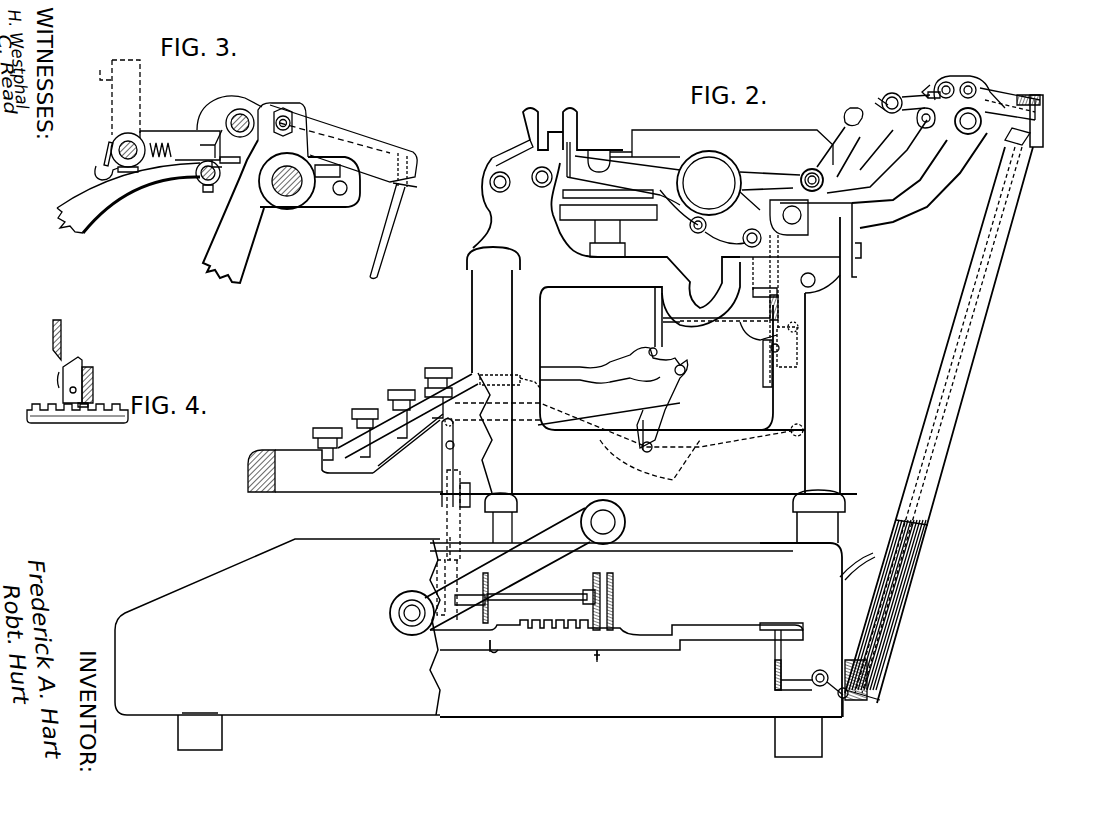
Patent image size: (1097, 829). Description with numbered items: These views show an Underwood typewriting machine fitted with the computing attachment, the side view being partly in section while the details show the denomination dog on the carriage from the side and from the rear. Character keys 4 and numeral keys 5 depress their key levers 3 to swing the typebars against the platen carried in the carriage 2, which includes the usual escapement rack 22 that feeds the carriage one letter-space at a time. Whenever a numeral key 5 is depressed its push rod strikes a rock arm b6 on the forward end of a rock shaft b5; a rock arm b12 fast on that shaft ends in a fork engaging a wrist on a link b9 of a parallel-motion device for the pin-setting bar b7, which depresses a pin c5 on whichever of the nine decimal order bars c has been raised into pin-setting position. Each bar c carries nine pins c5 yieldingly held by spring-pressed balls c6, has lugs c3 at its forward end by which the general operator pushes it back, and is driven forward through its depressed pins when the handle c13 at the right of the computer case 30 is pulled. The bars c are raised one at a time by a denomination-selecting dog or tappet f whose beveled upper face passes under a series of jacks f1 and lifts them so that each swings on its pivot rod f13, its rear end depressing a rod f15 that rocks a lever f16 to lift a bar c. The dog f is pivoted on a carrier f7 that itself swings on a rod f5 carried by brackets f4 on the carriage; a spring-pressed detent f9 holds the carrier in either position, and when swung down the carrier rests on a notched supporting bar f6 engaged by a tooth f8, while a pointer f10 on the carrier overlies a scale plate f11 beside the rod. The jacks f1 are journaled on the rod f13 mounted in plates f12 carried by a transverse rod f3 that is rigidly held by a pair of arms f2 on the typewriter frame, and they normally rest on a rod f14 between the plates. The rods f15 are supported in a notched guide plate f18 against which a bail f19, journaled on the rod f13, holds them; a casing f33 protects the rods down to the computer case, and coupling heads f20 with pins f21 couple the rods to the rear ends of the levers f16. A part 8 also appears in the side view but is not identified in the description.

In FIG. 2, the carriage 2 is at (800, 291).
In FIG. 2, the key levers 3 is at (363, 433).
In FIG. 2, the character keys 4 is at (362, 412).
In FIG. 2, the numeral keys 5 is at (432, 395).
In FIG. 2, the type bar 8 is at (774, 175).
In FIG. 2, the escapement rack 22 is at (750, 250).
In FIG. 2, the computer case 30 is at (468, 648).
In FIG. 2, the linkage-operating rock shaft b5 is at (542, 594).
In FIG. 2, the rock arm b6 is at (430, 592).
In FIG. 2, the pin-setting bar b7 is at (613, 615).
In FIG. 2, the link b9 is at (600, 580).
In FIG. 2, the rock arm b12 is at (583, 600).
In FIG. 2, the decimal order bar c is at (616, 640).
In FIG. 2, the lugs c3 is at (494, 652).
In FIG. 2, the pins c5 is at (558, 630).
In FIG. 2, the spring-pressed balls c6 is at (603, 662).
In FIG. 2, the handle c13 is at (525, 565).
In FIG. 3, the denomination-selecting dog f is at (210, 140).
In FIG. 4, the denomination-selecting dog f is at (80, 362).
In FIG. 2, the denomination-selecting dog f is at (925, 92).
In FIG. 3, the jacks f1 is at (240, 96).
In FIG. 4, the jacks f1 is at (62, 330).
In FIG. 2, the jacks f1 is at (940, 80).
In FIG. 3, the arms f2 is at (248, 270).
In FIG. 2, the arms f2 is at (919, 180).
In FIG. 3, the transverse rod f3 is at (288, 198).
In FIG. 2, the transverse rod f3 is at (968, 134).
In FIG. 3, the bracket f4 is at (108, 202).
In FIG. 2, the bracket f4 is at (850, 172).
In FIG. 3, the rod f5 is at (126, 142).
In FIG. 2, the rod f5 is at (884, 97).
In FIG. 3, the supporting bar f6 is at (205, 186).
In FIG. 4, the supporting bar f6 is at (57, 423).
In FIG. 2, the supporting bar f6 is at (920, 127).
In FIG. 3, the carrier f7 is at (155, 131).
In FIG. 4, the carrier f7 is at (94, 380).
In FIG. 2, the carrier f7 is at (898, 92).
In FIG. 3, the tooth f8 is at (233, 151).
In FIG. 4, the tooth f8 is at (81, 407).
In FIG. 3, the spring-pressed detent f9 is at (145, 165).
In FIG. 3, the pointer f10 is at (96, 172).
In FIG. 2, the pointer f10 is at (862, 123).
In FIG. 3, the scale plate f11 is at (104, 148).
In FIG. 2, the scale plate f11 is at (872, 100).
In FIG. 3, the plates f12 is at (325, 120).
In FIG. 2, the plates f12 is at (985, 97).
In FIG. 3, the pivot rod f13 is at (286, 112).
In FIG. 2, the pivot rod f13 is at (977, 88).
In FIG. 3, the rod f14 is at (236, 112).
In FIG. 2, the rod f14 is at (948, 82).
In FIG. 3, the rods f15 is at (372, 235).
In FIG. 2, the rods f15 is at (857, 575).
In FIG. 2, the lever f16 is at (802, 680).
In FIG. 3, the notched guide plate f18 is at (403, 187).
In FIG. 2, the notched guide plate f18 is at (1017, 143).
In FIG. 3, the bail f19 is at (355, 140).
In FIG. 2, the bail f19 is at (1055, 127).
In FIG. 2, the coupling heads f20 is at (870, 664).
In FIG. 2, the pins f21 is at (847, 705).
In FIG. 2, the casing f33 is at (920, 562).